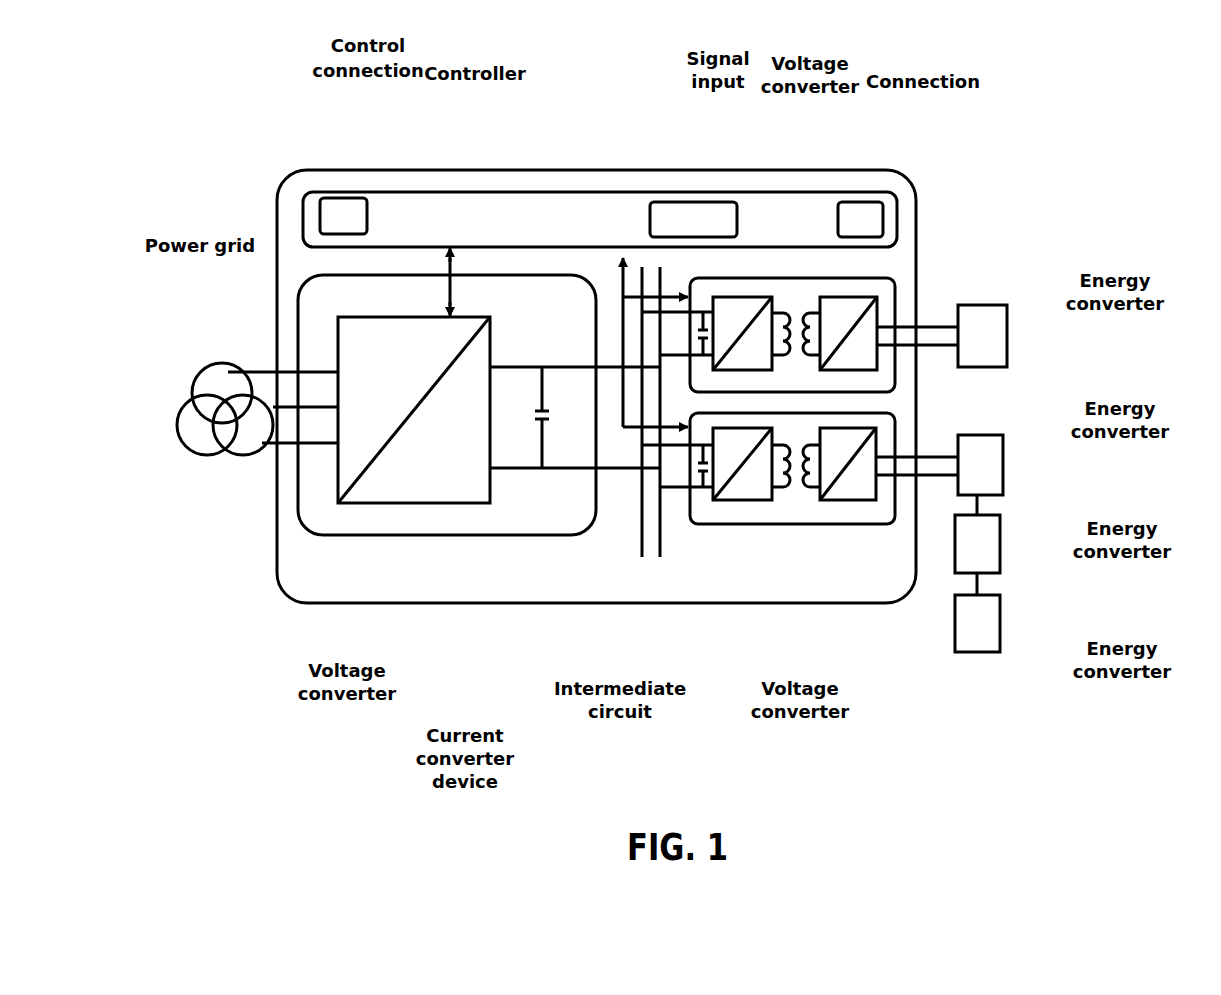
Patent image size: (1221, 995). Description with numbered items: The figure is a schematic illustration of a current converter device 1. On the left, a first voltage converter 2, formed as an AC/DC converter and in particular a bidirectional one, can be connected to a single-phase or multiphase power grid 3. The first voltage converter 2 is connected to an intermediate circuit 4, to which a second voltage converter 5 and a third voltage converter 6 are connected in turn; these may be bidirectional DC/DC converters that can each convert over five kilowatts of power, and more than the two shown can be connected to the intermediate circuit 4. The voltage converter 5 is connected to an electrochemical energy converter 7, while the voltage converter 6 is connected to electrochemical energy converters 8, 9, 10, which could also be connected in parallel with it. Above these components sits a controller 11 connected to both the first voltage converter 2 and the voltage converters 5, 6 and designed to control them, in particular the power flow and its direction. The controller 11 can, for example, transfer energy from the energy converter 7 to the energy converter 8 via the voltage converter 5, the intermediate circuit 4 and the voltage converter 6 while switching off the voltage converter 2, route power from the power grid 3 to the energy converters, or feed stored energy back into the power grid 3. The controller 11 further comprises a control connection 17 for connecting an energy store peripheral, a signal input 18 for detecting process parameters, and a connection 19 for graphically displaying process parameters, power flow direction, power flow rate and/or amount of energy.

The current converter device 1 is at (463, 593).
The first voltage converter 2 is at (388, 523).
The power grid 3 is at (216, 364).
The intermediate circuit 4 is at (630, 503).
The second voltage converter 5 is at (794, 300).
The third voltage converter 6 is at (785, 512).
The electrochemical energy converter 7 is at (995, 324).
The electrochemical energy converter 8 is at (990, 456).
The electrochemical energy converter 9 is at (990, 537).
The electrochemical energy converter 10 is at (988, 620).
The controller 11 is at (466, 215).
The control connection 17 is at (348, 200).
The signal input 18 is at (700, 202).
The connection 19 is at (855, 215).